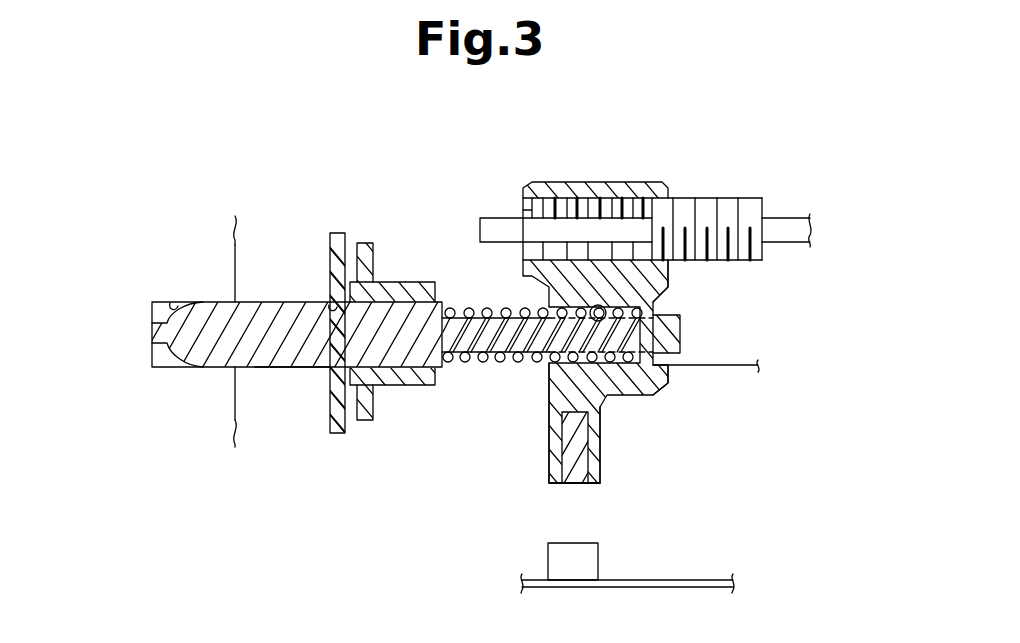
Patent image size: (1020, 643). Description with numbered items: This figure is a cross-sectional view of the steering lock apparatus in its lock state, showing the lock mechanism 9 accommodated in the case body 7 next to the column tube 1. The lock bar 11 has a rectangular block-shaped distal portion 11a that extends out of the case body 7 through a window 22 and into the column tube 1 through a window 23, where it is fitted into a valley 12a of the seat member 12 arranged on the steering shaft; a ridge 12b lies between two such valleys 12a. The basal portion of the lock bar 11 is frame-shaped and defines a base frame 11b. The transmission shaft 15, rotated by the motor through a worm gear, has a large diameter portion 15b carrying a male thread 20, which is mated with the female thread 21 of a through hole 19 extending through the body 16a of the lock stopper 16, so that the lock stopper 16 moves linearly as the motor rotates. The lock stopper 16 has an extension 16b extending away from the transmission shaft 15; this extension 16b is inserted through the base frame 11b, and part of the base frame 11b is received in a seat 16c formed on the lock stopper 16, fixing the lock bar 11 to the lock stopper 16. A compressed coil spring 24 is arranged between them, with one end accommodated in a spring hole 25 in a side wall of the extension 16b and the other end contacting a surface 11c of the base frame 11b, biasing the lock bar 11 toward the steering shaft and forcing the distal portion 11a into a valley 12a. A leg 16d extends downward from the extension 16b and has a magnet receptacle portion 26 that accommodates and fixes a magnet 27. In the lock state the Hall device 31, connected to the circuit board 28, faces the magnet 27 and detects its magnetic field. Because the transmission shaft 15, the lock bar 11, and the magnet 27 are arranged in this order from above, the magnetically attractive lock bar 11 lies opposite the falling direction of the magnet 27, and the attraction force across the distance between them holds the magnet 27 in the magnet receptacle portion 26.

The lock mechanism 9 is at (430, 160).
The column tube 1 is at (345, 240).
The case body 7 is at (354, 414).
The lock bar 11 is at (263, 296).
The distal portion 11a is at (288, 367).
The base frame 11b is at (681, 331).
The surface 11c is at (518, 361).
The seat member 12 is at (239, 402).
The valley 12a is at (176, 302).
The ridge 12b is at (239, 334).
The transmission shaft 15 is at (488, 210).
The large diameter portion 15b is at (766, 206).
The lock stopper 16 is at (650, 172).
The body 16a is at (559, 181).
The extension 16b is at (670, 287).
The seat 16c is at (668, 365).
The leg 16d is at (549, 450).
The through hole 19 is at (518, 200).
The male thread 20 is at (731, 198).
The female thread 21 is at (616, 206).
The window 22 is at (412, 302).
The window 23 is at (331, 304).
The coil spring 24 is at (490, 307).
The spring hole 25 is at (597, 305).
The magnet receptacle portion 26 is at (566, 483).
The magnet 27 is at (584, 437).
The circuit board 28 is at (680, 588).
The Hall device 31 is at (589, 543).